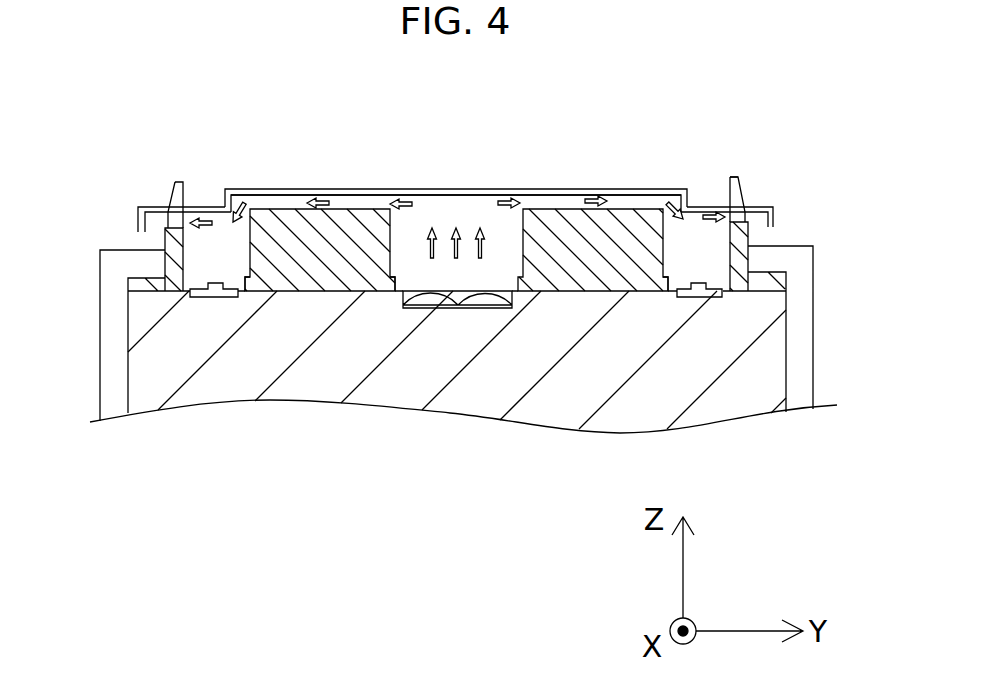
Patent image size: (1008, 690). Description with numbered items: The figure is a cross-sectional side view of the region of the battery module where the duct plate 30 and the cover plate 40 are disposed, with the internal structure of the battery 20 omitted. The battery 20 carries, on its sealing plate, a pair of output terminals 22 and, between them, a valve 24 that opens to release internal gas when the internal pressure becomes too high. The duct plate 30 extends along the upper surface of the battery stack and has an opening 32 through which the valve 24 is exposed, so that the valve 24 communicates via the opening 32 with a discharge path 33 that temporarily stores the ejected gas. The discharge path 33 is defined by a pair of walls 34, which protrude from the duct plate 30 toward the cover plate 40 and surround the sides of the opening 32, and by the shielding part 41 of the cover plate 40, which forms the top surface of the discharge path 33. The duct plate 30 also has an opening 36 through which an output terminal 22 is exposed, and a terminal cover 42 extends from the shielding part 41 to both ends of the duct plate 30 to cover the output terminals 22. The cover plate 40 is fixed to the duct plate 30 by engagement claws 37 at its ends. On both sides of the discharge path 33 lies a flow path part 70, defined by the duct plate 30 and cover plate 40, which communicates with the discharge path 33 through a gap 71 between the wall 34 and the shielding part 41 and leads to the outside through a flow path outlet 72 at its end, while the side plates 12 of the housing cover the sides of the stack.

The side plate 12 is at (100, 318).
The battery 20 is at (410, 380).
The output terminal 22 is at (205, 299).
The valve 24 is at (492, 301).
The duct plate 30 is at (572, 298).
The opening 32 is at (396, 289).
The discharge path 33 is at (441, 212).
The wall 34 is at (318, 284).
The opening 36 is at (247, 292).
The engagement claw 37 is at (731, 177).
The cover plate 40 is at (528, 166).
The shielding part 41 is at (458, 189).
The terminal cover 42 is at (207, 204).
The flow path part 70 is at (241, 196).
The gap 71 is at (361, 192).
The flow path outlet 72 is at (180, 207).